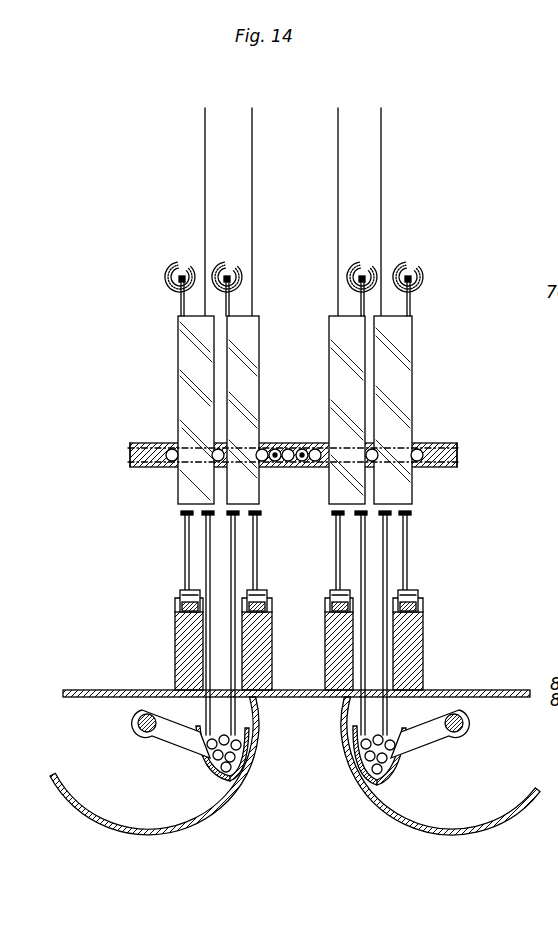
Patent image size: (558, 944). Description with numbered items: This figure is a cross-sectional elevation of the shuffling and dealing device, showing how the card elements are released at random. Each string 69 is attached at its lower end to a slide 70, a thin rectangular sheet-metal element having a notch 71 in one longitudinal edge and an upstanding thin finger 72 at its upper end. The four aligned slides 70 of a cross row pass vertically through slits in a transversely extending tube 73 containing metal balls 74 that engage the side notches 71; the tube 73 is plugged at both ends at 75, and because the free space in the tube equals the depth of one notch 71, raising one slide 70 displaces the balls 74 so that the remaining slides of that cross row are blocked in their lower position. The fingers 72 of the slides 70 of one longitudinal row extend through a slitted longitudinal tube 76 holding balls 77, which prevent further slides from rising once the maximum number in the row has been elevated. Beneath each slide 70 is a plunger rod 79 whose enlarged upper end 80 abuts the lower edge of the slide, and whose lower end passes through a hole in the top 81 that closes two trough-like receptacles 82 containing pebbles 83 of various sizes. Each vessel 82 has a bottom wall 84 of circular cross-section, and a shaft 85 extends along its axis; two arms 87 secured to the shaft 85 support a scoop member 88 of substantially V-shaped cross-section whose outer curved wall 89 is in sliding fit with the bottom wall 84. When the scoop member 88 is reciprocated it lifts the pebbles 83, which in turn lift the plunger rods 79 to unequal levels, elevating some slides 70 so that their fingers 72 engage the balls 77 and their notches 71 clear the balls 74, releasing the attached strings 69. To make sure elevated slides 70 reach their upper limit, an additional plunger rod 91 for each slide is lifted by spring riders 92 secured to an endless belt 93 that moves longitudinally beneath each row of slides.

The string 69 is at (250, 172).
The slide 70 is at (186, 381).
The notch 71 is at (312, 446).
The finger 72 is at (226, 301).
The transversely extending tube 73 is at (154, 444).
The metal balls 74 is at (170, 465).
The plug 75 is at (140, 467).
The longitudinally extending tube 76 is at (242, 284).
The balls 77 is at (167, 277).
The plunger rod 79 is at (232, 540).
The enlarged upper end 80 is at (206, 516).
The top 81 is at (437, 690).
The trough-like receptacle 82 is at (222, 811).
The pebbles 83 is at (226, 769).
The bottom wall 84 is at (158, 833).
The shaft 85 is at (134, 723).
The arm 87 is at (172, 742).
The scoop member 88 is at (224, 753).
The outer curved wall 89 is at (250, 739).
The additional plunger rod 91 is at (187, 575).
The spring rider 92 is at (264, 598).
The endless belt 93 is at (273, 619).